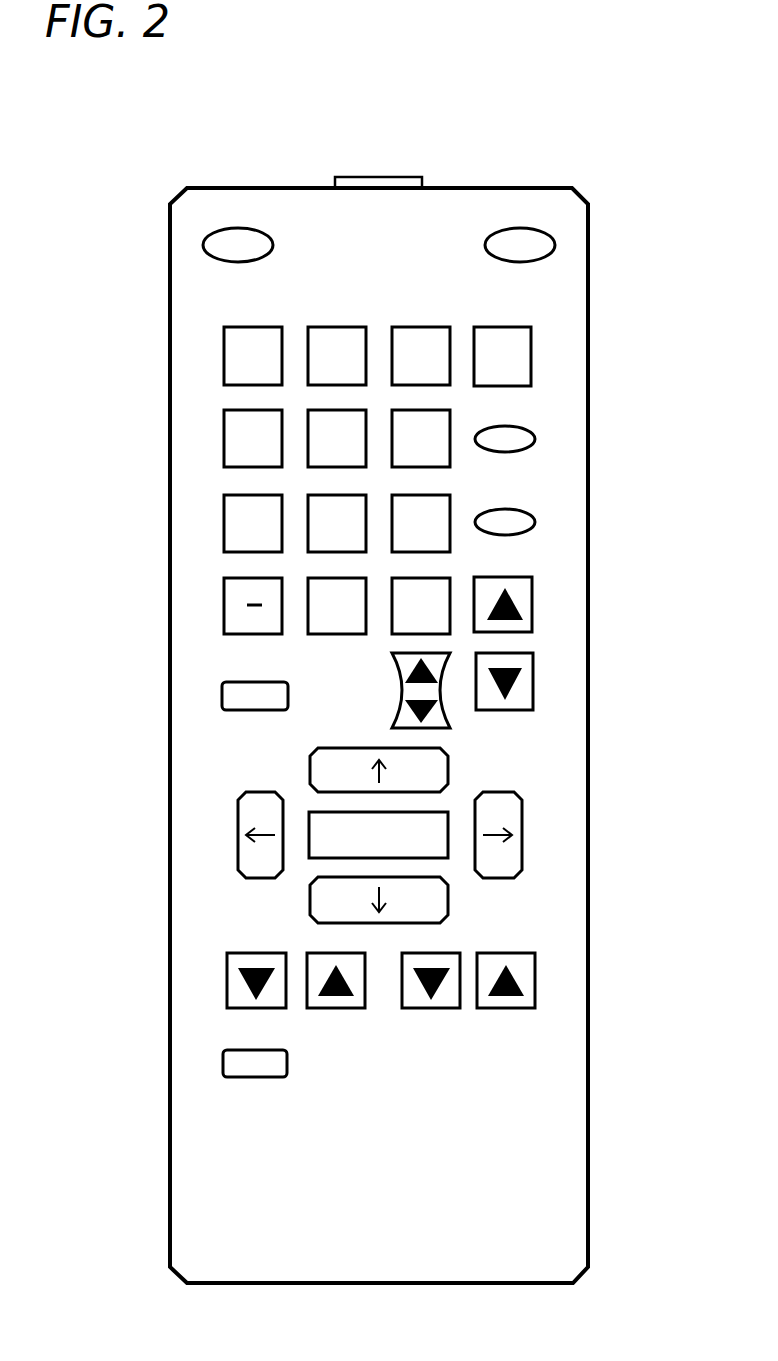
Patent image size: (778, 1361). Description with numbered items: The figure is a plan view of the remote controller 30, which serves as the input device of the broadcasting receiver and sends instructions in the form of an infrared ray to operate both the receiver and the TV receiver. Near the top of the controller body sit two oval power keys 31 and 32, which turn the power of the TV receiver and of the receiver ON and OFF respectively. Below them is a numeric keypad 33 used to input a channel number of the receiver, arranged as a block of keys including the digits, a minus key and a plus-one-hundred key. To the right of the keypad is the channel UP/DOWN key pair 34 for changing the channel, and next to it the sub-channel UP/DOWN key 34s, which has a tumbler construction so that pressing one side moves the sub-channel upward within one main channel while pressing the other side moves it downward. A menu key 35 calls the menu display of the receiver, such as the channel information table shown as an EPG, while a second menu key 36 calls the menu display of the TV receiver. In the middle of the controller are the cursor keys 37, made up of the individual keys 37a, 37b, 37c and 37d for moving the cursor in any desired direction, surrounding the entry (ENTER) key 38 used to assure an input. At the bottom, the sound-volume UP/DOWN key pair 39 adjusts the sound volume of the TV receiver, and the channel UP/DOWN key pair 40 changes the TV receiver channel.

The remote controller 30 is at (428, 102).
The power key 31 is at (522, 228).
The power key 32 is at (250, 229).
The numeric keypad 33 is at (215, 320).
The channel UP/DOWN key pair 34 is at (543, 575).
The sub-channel UP/DOWN key 34s is at (450, 722).
The menu key 35 is at (222, 700).
The menu key 36 is at (223, 1065).
The cursor keys 37 is at (421, 829).
The cursor key 37a is at (448, 772).
The cursor key 37b is at (448, 898).
The cursor key 37c is at (238, 836).
The cursor key 37d is at (522, 820).
The entry (ENTER) key 38 is at (323, 858).
The sound-volume UP/DOWN key pair 39 is at (227, 1033).
The channel UP/DOWN key pair 40 is at (535, 1033).